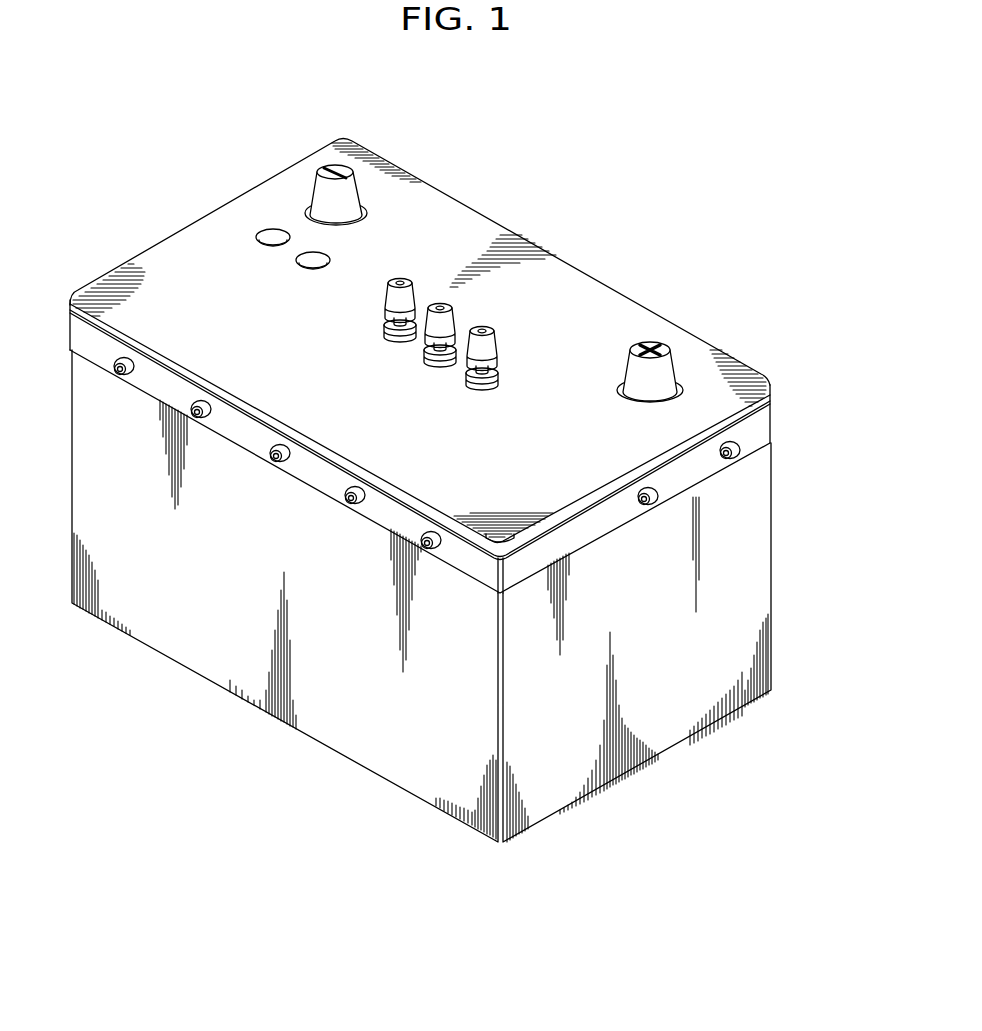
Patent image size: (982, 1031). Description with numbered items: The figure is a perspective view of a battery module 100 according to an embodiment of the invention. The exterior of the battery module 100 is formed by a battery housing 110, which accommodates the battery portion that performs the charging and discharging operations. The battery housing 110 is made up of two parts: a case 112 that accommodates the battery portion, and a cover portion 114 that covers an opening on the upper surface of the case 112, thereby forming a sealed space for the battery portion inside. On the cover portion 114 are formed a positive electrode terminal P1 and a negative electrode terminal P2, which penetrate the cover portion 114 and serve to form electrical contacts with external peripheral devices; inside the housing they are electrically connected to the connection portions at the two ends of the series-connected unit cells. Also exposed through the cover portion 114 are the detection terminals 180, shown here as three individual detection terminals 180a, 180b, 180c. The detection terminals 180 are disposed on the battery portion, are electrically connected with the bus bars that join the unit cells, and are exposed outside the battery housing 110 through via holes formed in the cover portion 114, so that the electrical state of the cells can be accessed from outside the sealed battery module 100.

The battery module 100 is at (660, 136).
The battery housing 110 is at (834, 363).
The case 112 is at (743, 472).
The cover portion 114 is at (717, 378).
The detection terminals 180 is at (527, 160).
The detection terminal 180a is at (413, 293).
The detection terminal 180b is at (449, 321).
The detection terminal 180c is at (495, 338).
The positive electrode terminal P1 is at (661, 342).
The negative electrode terminal P2 is at (350, 168).